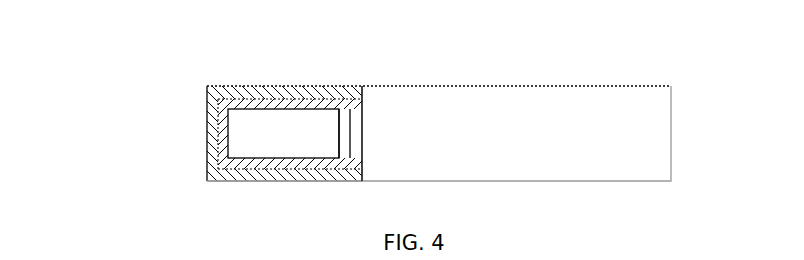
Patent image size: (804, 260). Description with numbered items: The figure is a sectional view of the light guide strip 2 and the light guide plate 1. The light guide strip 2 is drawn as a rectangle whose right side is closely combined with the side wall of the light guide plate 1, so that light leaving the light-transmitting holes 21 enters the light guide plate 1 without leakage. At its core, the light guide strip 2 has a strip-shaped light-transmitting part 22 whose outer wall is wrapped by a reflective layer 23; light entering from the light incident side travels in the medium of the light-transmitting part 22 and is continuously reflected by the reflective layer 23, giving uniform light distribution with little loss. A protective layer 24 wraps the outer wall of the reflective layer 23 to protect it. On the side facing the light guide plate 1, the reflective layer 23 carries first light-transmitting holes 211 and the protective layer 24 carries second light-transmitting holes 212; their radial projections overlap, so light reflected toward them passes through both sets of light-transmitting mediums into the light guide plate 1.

The light guide plate 1 is at (662, 128).
The light guide strip 2 is at (279, 96).
The light-transmitting holes 21 is at (354, 96).
The first light-transmitting holes 211 is at (346, 100).
The second light-transmitting holes 212 is at (381, 116).
The light-transmitting part 22 is at (245, 150).
The reflective layer 23 is at (218, 120).
The protective layer 24 is at (212, 101).